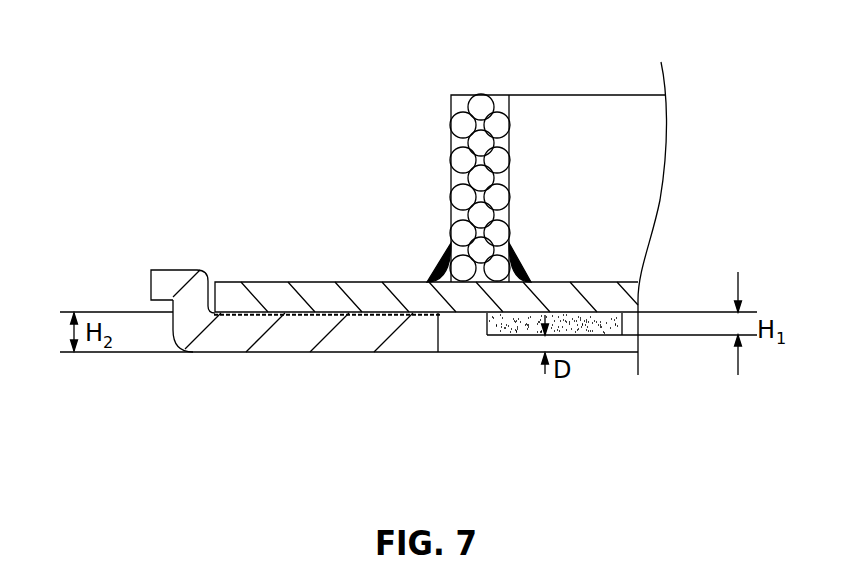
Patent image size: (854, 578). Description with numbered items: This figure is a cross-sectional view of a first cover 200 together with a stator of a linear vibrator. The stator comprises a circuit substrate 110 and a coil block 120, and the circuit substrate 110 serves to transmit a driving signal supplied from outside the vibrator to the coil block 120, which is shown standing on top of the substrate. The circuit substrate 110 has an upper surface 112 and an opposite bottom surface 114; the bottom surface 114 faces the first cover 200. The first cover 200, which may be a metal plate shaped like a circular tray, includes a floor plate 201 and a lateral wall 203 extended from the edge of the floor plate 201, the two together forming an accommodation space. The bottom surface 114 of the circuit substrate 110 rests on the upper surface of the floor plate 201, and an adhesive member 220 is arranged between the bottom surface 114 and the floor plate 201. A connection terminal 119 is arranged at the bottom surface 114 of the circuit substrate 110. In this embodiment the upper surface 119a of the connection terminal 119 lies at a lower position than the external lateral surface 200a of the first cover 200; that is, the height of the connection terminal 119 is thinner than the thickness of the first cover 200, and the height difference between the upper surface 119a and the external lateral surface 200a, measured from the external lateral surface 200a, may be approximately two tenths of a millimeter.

The circuit substrate 110 is at (362, 282).
The upper surface 112 is at (312, 282).
The bottom surface 114 is at (252, 313).
The connection terminal 119 is at (512, 336).
The upper surface of connection terminal 119a is at (598, 336).
The coil block 120 is at (511, 133).
The first cover 200 is at (190, 360).
The external lateral surface 200a is at (400, 353).
The floor plate 201 is at (358, 343).
The lateral wall 203 is at (197, 282).
The adhesive member 220 is at (330, 314).